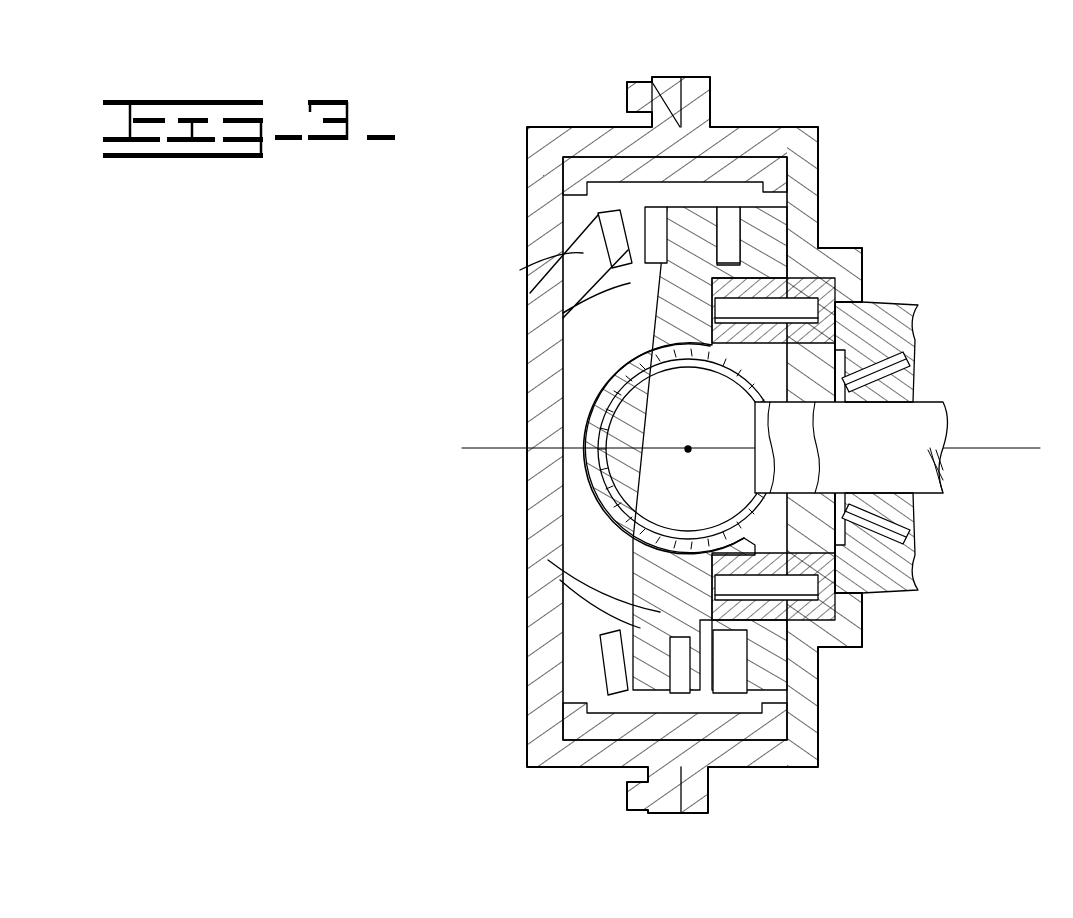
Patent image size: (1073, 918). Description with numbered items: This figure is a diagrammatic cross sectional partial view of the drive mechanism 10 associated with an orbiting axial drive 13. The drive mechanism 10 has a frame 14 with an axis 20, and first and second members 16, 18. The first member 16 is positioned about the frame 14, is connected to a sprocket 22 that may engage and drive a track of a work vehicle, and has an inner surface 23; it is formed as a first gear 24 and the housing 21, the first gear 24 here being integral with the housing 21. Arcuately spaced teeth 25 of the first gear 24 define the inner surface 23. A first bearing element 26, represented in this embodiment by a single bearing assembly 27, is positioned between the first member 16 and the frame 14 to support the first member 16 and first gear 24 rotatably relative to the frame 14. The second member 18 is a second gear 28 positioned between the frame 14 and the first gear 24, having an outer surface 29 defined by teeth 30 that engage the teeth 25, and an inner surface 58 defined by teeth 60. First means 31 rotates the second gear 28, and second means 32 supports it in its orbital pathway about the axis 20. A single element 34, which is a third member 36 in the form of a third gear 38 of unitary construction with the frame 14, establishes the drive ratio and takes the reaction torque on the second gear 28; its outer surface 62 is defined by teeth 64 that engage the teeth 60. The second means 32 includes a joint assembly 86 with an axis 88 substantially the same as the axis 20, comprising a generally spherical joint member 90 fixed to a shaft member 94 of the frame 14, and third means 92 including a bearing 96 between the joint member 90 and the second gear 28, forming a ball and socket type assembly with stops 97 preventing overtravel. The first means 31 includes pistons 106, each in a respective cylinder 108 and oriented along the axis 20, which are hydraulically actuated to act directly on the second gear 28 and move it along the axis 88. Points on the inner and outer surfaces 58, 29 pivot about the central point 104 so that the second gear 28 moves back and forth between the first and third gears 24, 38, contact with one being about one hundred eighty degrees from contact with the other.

The drive mechanism 10 is at (545, 533).
The orbiting axial drive 13 is at (892, 145).
The frame 14 is at (851, 447).
The first member 16 is at (895, 258).
The second member 18 is at (565, 578).
The axis 20 is at (1000, 450).
The housing 21 is at (800, 132).
The sprocket 22 is at (632, 98).
The inner surface 23 is at (665, 195).
The first gear 24 is at (582, 258).
The teeth 25 is at (626, 285).
The first bearing element 26 is at (912, 352).
The bearing assembly 27 is at (905, 513).
The second gear 28 is at (640, 575).
The outer surface 29 is at (652, 292).
The teeth 30 is at (662, 229).
The first means 31 is at (838, 622).
The second means 32 is at (595, 431).
The single element 34 is at (752, 710).
The third member 36 is at (795, 693).
The third gear 38 is at (770, 690).
The inner surface 58 is at (700, 680).
The teeth 60 is at (672, 680).
The outer surface 62 is at (690, 640).
The teeth 64 is at (740, 652).
The joint assembly 86 is at (600, 462).
The axis 88 is at (985, 430).
The joint member 90 is at (722, 421).
The third means 92 is at (592, 396).
The shaft member 94 is at (906, 443).
The bearing 96 is at (608, 418).
The stops 97 is at (782, 447).
The central point 104 is at (690, 452).
The pistons 106 is at (800, 320).
The cylinder 108 is at (818, 312).